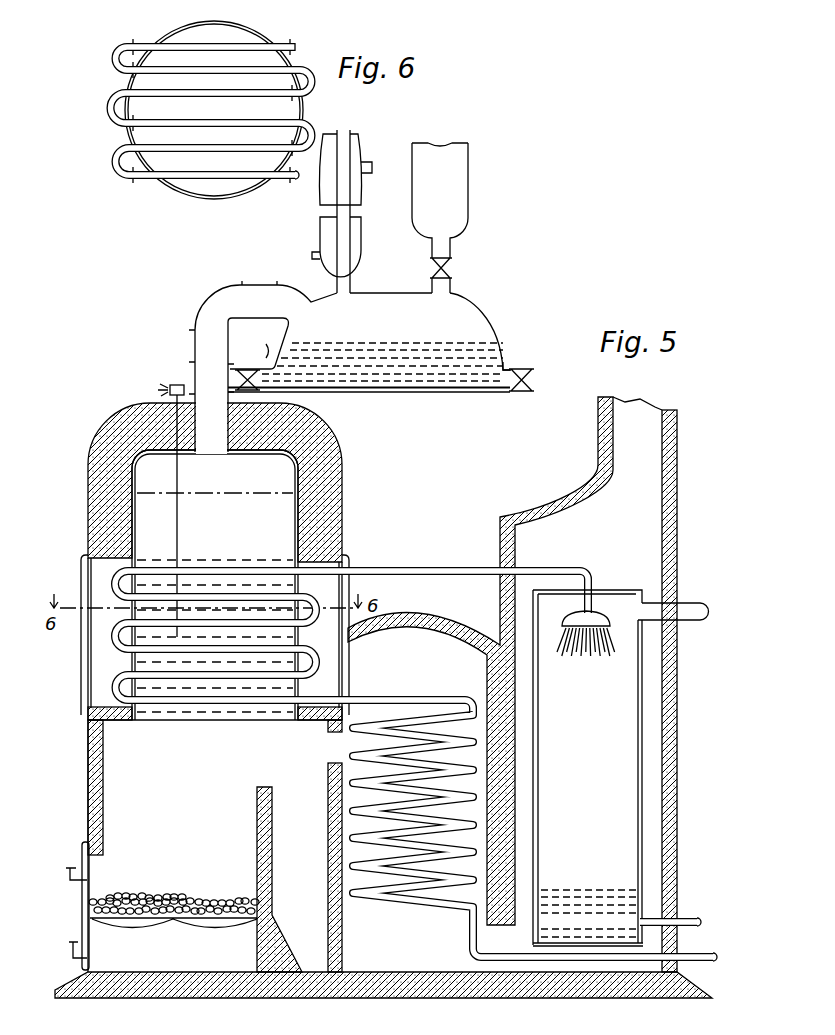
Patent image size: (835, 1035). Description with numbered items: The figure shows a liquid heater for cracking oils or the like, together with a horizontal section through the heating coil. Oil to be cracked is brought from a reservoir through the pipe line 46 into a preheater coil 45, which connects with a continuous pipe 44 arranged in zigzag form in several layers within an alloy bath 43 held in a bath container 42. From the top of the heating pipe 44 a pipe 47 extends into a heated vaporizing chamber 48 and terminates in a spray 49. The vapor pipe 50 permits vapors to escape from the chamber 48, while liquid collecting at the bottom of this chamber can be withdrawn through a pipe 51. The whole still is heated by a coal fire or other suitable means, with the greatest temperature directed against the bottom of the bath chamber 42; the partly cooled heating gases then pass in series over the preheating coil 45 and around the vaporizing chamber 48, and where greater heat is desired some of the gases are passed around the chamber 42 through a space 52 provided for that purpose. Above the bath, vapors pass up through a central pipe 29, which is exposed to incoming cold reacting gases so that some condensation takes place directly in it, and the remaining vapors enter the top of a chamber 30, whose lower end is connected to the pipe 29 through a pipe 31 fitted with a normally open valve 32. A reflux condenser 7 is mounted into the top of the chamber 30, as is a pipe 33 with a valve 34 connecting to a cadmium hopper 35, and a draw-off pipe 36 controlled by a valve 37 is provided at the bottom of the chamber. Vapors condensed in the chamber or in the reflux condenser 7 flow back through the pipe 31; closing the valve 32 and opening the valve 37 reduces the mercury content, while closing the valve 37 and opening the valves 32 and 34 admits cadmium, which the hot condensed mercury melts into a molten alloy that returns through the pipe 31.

In FIG. 5, the reflux condenser 7 is at (346, 164).
In FIG. 5, the central pipe 29 is at (194, 371).
In FIG. 5, the chamber 30 is at (454, 316).
In FIG. 5, the pipe 31 is at (259, 343).
In FIG. 5, the valve 32 is at (252, 393).
In FIG. 5, the pipe 33 is at (452, 292).
In FIG. 5, the valve 34 is at (451, 267).
In FIG. 5, the cadmium hopper 35 is at (458, 161).
In FIG. 5, the draw-off pipe 36 is at (505, 367).
In FIG. 5, the valve 37 is at (535, 380).
In FIG. 5, the bath container 42 is at (342, 470).
In FIG. 5, the alloy bath 43 is at (88, 527).
In FIG. 6, the continuous pipe 44 is at (292, 70).
In FIG. 5, the continuous pipe 44 is at (113, 572).
In FIG. 5, the preheater coil 45 is at (403, 901).
In FIG. 5, the pipe line 46 is at (701, 956).
In FIG. 5, the pipe 47 is at (443, 573).
In FIG. 5, the vaporizing chamber 48 is at (620, 603).
In FIG. 5, the spray 49 is at (562, 622).
In FIG. 5, the vapor pipe 50 is at (702, 607).
In FIG. 5, the pipe 51 is at (694, 919).
In FIG. 5, the space 52 is at (341, 592).